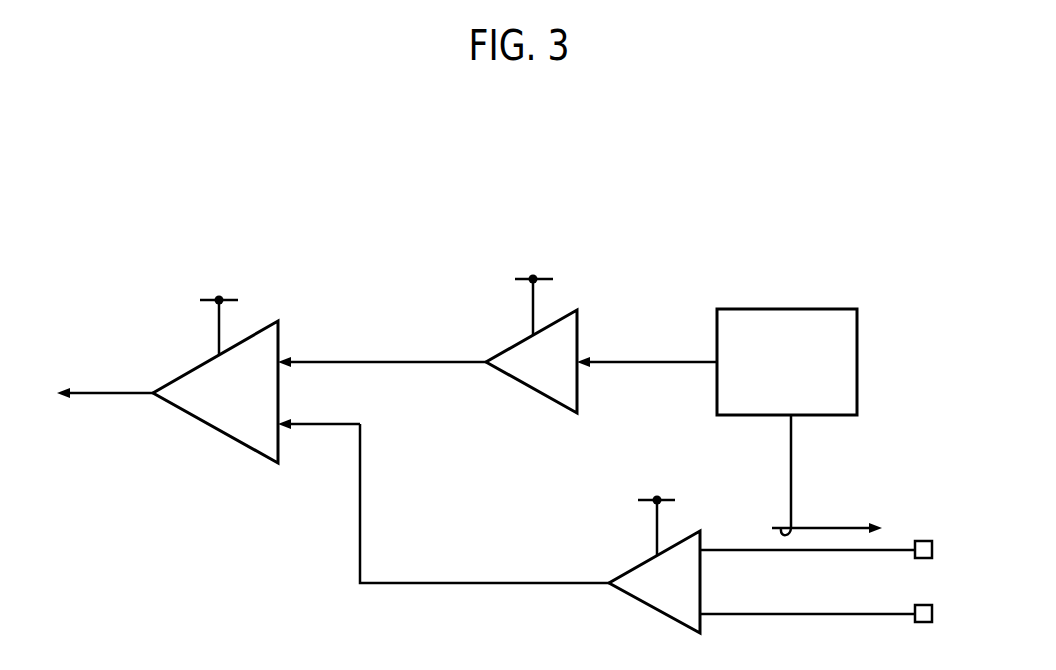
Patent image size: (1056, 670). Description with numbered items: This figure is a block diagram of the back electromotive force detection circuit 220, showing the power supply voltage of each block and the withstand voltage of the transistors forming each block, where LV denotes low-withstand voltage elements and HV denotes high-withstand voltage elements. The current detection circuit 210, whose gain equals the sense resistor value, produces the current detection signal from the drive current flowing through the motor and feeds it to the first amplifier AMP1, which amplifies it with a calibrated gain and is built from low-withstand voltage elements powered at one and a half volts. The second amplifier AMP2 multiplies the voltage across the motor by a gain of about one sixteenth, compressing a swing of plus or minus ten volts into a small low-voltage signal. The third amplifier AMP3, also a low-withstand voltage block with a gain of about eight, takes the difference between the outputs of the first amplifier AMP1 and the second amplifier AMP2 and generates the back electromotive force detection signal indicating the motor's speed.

The current detection circuit 210 is at (788, 309).
The back electromotive force detection circuit 220 is at (699, 131).
The first amplifier AMP1 is at (535, 392).
The second amplifier AMP2 is at (652, 608).
The third amplifier AMP3 is at (219, 432).